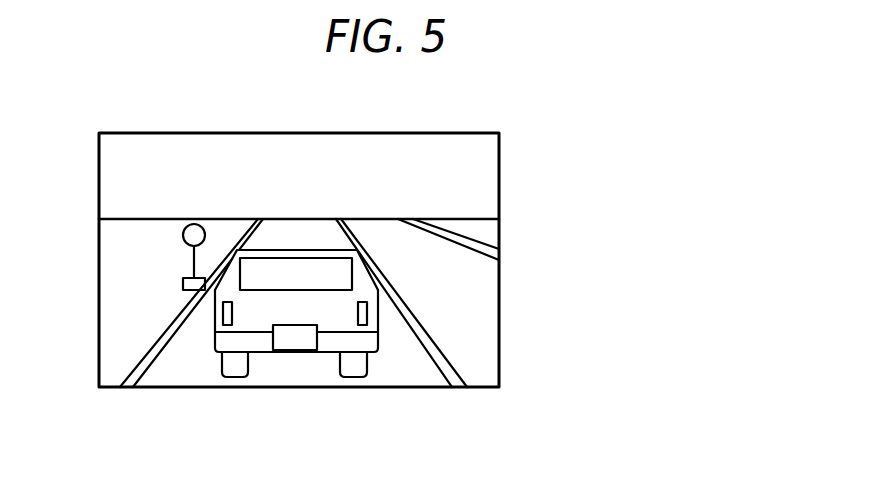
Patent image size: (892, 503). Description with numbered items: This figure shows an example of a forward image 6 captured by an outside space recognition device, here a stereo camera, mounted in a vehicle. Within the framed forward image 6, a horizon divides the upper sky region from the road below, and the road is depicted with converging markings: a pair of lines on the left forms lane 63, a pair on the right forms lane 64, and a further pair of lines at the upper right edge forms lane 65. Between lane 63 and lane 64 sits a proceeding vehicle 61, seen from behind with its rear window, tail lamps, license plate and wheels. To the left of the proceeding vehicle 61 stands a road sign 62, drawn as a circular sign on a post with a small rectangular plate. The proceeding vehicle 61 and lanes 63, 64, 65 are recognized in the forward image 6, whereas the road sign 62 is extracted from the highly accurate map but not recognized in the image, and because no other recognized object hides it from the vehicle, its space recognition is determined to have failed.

The forward image 6 is at (283, 133).
The proceeding vehicle 61 is at (290, 352).
The road sign 62 is at (185, 228).
The lane 63 is at (190, 301).
The lane 64 is at (423, 330).
The lane 65 is at (475, 245).